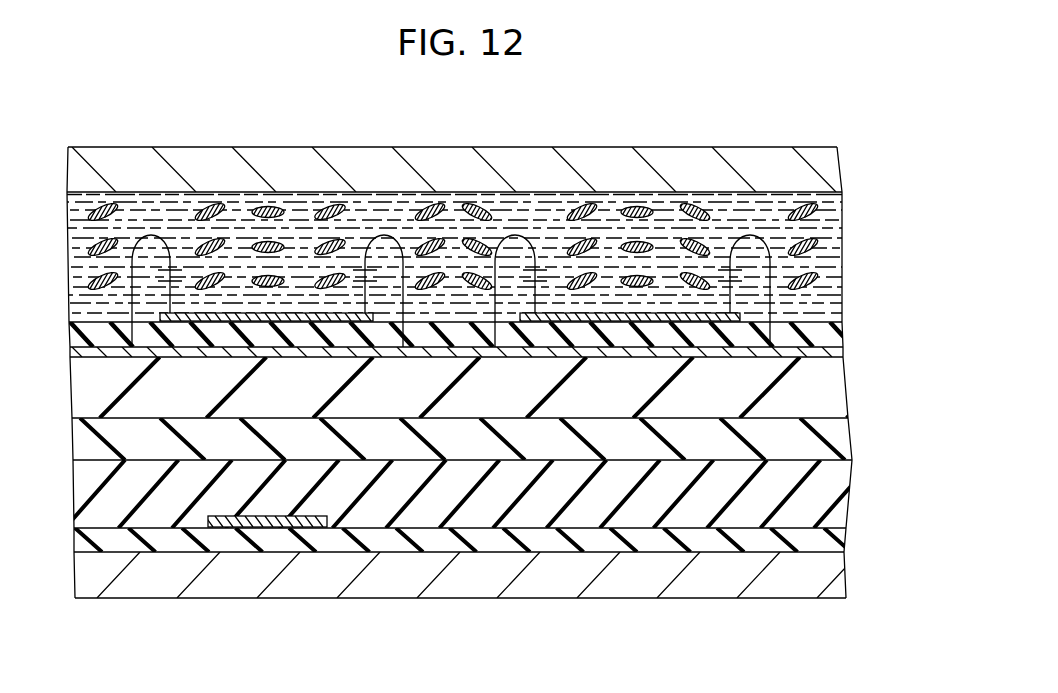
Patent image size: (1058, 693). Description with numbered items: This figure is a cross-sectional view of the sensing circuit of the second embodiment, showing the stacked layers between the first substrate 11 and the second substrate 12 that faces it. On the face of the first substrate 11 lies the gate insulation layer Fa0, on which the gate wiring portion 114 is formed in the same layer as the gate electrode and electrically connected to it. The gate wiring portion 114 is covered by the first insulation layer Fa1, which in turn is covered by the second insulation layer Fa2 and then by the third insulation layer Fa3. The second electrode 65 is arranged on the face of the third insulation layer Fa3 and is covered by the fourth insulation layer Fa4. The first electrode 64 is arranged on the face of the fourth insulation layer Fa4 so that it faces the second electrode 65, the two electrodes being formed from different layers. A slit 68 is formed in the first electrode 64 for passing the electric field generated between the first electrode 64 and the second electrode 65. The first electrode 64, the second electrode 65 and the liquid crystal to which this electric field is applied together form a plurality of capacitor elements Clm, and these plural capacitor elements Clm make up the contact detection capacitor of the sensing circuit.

The second substrate 12 is at (832, 165).
The slit 68 is at (457, 306).
The capacitor element Clm is at (546, 261).
The first electrode 64 is at (233, 318).
The fourth insulation layer Fa4 is at (838, 343).
The second electrode 65 is at (838, 352).
The third insulation layer Fa3 is at (830, 390).
The second insulation layer Fa2 is at (836, 432).
The first insulation layer Fa1 is at (838, 470).
The gate insulation layer Fa0 is at (825, 533).
The first substrate 11 is at (830, 580).
The gate wiring portion 114 is at (233, 527).